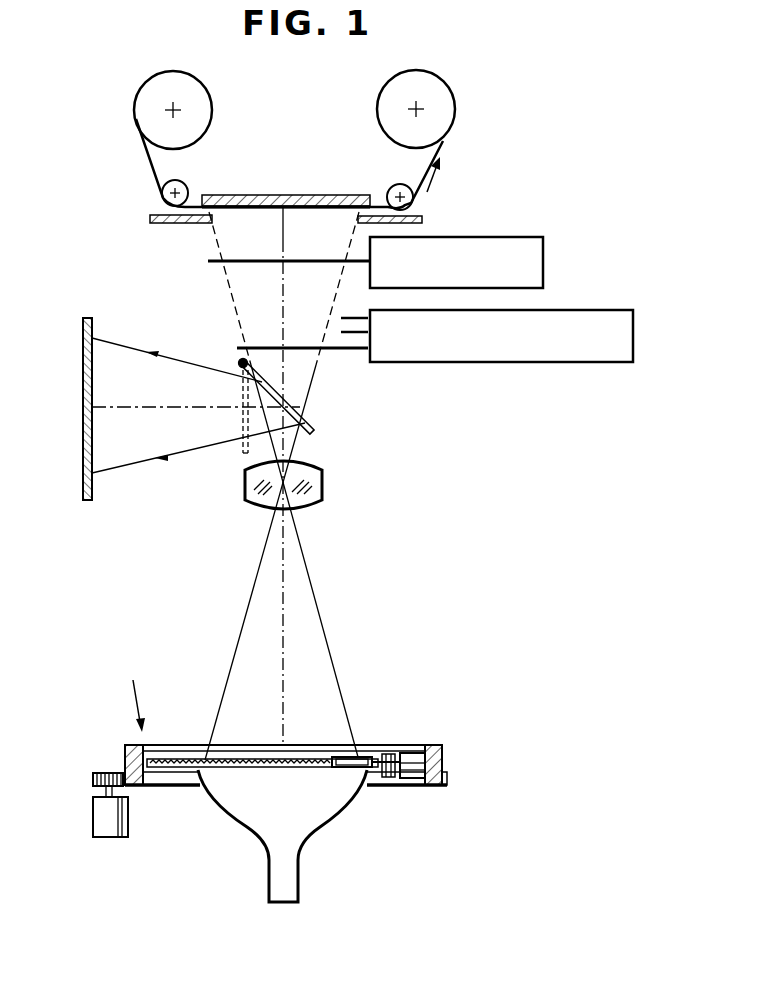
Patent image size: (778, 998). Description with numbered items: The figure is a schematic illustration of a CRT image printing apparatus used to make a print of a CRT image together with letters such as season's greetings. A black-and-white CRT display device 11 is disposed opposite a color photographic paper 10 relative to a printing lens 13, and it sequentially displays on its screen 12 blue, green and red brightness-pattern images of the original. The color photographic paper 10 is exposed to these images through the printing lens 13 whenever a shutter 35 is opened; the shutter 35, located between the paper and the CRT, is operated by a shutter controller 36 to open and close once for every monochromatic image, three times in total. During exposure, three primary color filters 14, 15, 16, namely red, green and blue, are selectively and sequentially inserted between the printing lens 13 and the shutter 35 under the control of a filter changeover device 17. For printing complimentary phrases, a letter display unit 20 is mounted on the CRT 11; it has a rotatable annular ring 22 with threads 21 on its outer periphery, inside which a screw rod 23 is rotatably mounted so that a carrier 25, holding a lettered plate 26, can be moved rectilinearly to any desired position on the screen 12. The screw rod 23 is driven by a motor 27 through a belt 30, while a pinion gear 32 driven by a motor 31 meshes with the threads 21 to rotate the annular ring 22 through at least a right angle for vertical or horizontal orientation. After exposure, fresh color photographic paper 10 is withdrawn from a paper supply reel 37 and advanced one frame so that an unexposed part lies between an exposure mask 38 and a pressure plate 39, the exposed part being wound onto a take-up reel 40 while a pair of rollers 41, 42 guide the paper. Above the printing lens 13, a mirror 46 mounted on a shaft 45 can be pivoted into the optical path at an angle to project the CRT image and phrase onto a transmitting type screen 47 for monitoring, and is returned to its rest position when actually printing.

The color photographic paper 10 is at (318, 195).
The CRT display device 11 is at (261, 841).
The screen 12 is at (232, 767).
The printing lens 13 is at (323, 487).
The primary color filter 14 is at (237, 348).
The primary color filter 15 is at (345, 335).
The primary color filter 16 is at (362, 350).
The filter changeover device 17 is at (497, 363).
The letter display unit 20 is at (281, 698).
The threads 21 is at (448, 778).
The annular ring 22 is at (440, 747).
The screw rod 23 is at (178, 757).
The carrier 25 is at (365, 757).
The lettered plate 26 is at (335, 757).
The motor 27 is at (412, 755).
The belt 30 is at (387, 777).
The motor 31 is at (107, 837).
The pinion gear 32 is at (108, 773).
The shutter 35 is at (208, 261).
The shutter controller 36 is at (485, 237).
The paper supply reel 37 is at (133, 108).
The exposure mask 38 is at (158, 215).
The pressure plate 39 is at (263, 195).
The take-up reel 40 is at (455, 108).
The roller 41 is at (186, 184).
The roller 42 is at (388, 188).
The shaft 45 is at (238, 361).
The mirror 46 is at (314, 432).
The transmitting type screen 47 is at (83, 420).